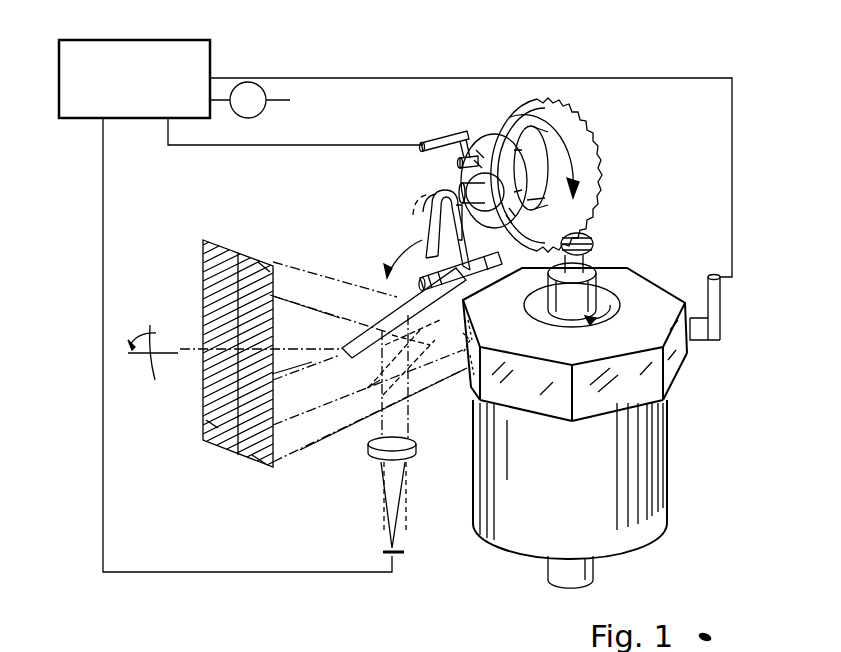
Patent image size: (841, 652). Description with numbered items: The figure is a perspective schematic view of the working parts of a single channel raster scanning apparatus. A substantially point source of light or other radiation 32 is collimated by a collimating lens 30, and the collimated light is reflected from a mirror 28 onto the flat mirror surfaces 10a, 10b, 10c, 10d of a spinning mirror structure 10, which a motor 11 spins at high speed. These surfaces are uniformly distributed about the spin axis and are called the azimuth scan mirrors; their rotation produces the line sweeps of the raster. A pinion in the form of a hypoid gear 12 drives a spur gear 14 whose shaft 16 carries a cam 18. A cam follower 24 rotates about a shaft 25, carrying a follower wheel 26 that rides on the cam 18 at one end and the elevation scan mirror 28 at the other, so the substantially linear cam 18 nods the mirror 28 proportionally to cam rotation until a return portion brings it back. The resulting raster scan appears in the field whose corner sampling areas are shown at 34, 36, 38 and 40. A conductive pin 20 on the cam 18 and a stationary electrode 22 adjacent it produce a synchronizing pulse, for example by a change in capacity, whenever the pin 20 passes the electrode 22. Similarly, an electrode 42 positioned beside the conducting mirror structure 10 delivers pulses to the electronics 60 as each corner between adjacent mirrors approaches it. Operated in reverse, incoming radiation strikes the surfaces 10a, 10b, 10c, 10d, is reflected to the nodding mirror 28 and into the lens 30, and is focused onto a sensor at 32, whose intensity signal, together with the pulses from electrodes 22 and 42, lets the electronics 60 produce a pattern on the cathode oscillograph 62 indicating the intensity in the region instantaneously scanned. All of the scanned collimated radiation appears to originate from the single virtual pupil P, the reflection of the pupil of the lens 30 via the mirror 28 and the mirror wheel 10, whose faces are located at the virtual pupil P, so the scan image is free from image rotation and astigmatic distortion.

The spinning mirror structure 10 is at (581, 348).
The mirror surface 10a is at (686, 372).
The mirror surface 10b is at (599, 405).
The mirror surface 10c is at (534, 405).
The mirror surface 10d is at (470, 380).
The motor 11 is at (533, 548).
The hypoid gear 12 is at (596, 246).
The spur gear 14 is at (592, 142).
The shaft 16 is at (513, 135).
The cam 18 is at (486, 136).
The conductive pin 20 is at (458, 162).
The stationary electrode 22 is at (459, 135).
The cam follower 24 is at (438, 232).
The shaft 25 is at (500, 258).
The follower wheel 26 is at (440, 190).
The mirror 28 is at (341, 352).
The collimating lens 30 is at (418, 450).
The point source of light 32 is at (405, 553).
The sampling area 34 is at (215, 242).
The sampling area 36 is at (262, 260).
The sampling area 38 is at (212, 420).
The sampling area 40 is at (258, 462).
The electrode 42 is at (722, 332).
The electronics 60 is at (202, 58).
The cathode oscillograph 62 is at (264, 100).
The virtual pupil P is at (474, 338).